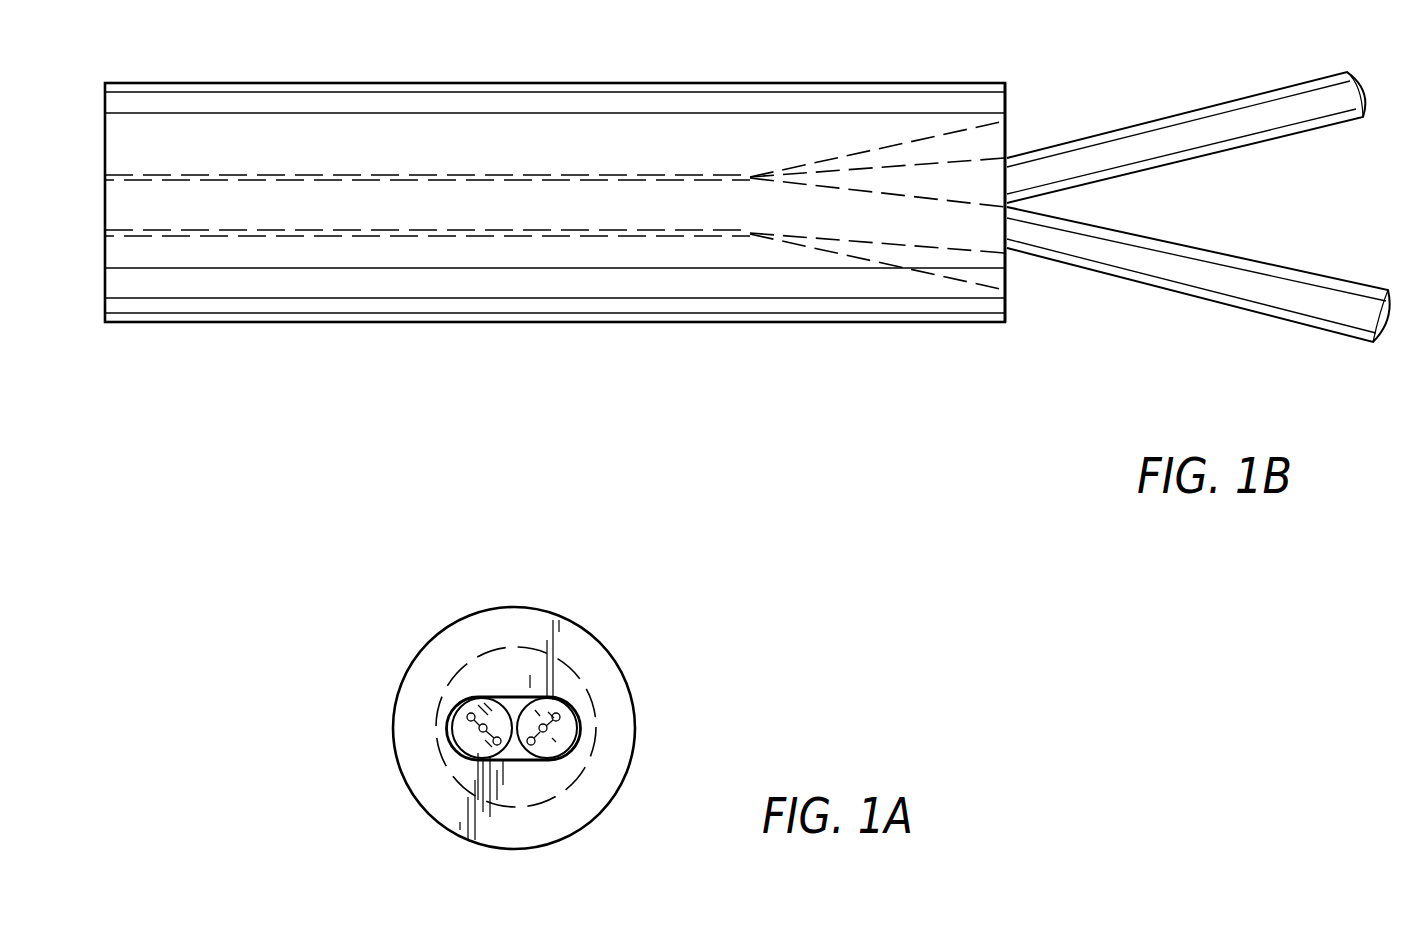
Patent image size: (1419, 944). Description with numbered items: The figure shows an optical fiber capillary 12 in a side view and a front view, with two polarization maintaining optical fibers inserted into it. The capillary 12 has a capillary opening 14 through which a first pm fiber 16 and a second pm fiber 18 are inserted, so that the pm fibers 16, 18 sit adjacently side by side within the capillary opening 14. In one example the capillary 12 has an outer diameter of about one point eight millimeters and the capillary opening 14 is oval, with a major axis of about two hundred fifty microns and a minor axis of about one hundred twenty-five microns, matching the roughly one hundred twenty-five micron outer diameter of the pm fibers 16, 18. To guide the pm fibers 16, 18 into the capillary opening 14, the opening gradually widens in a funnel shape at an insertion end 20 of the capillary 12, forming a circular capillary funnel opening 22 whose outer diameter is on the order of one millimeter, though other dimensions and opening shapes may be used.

In FIG. 1B, the optical fiber capillary 12 is at (202, 83).
In FIG. 1A, the optical fiber capillary 12 is at (478, 610).
In FIG. 1B, the capillary opening 14 is at (174, 236).
In FIG. 1A, the capillary opening 14 is at (519, 697).
In FIG. 1B, the first polarization maintaining optical fiber 16 is at (1267, 95).
In FIG. 1A, the first polarization maintaining optical fiber 16 is at (500, 753).
In FIG. 1B, the second polarization maintaining optical fiber 18 is at (1288, 317).
In FIG. 1A, the second polarization maintaining optical fiber 18 is at (553, 750).
In FIG. 1B, the insertion end 20 is at (1007, 303).
In FIG. 1B, the capillary funnel opening 22 is at (1007, 135).
In FIG. 1A, the capillary funnel opening 22 is at (593, 713).